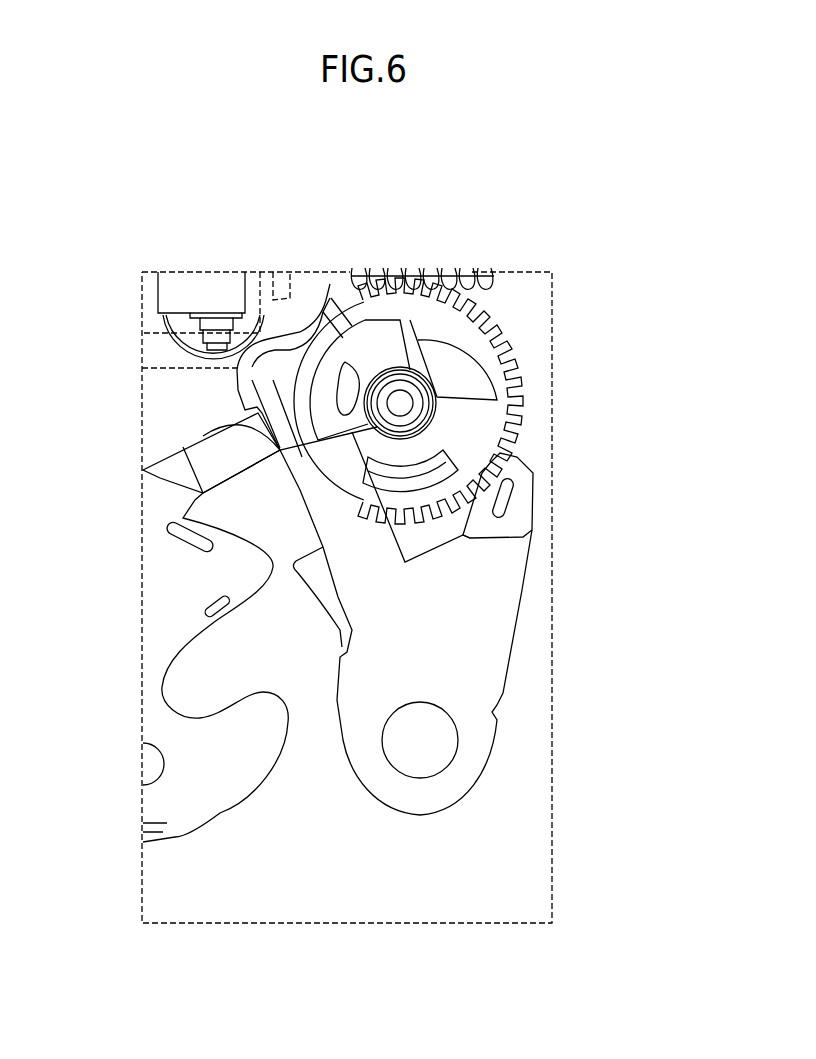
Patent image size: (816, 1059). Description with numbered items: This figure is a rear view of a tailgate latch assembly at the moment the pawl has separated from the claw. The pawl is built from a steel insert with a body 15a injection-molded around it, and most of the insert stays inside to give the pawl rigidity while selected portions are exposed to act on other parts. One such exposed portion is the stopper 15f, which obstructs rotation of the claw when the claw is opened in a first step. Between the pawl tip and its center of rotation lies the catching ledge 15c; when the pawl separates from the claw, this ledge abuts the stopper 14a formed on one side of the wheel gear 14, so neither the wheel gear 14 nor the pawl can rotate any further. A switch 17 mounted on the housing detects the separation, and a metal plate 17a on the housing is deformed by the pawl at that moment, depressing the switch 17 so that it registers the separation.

The wheel gear 14 is at (510, 355).
The stopper 14a is at (333, 310).
The body 15a is at (522, 590).
The catching ledge 15c is at (187, 433).
The stopper 15f is at (312, 577).
The switch 17 is at (217, 350).
The plate 17a is at (200, 352).